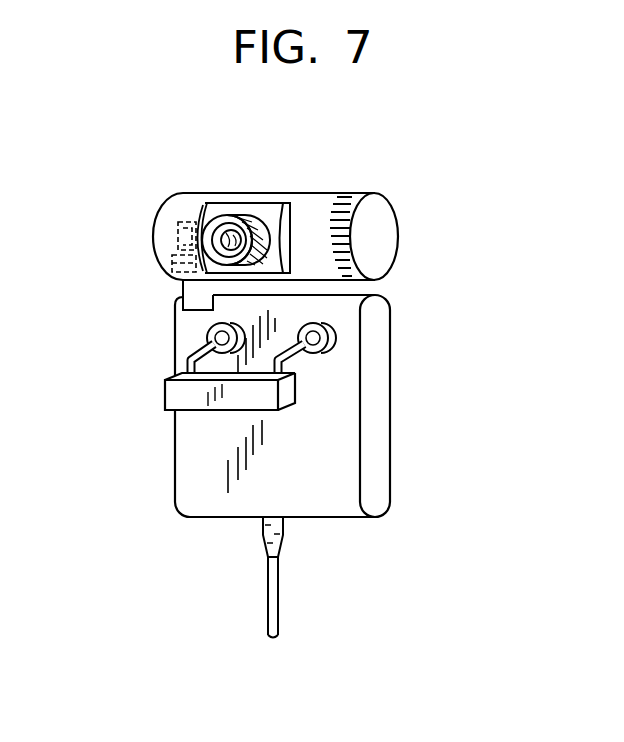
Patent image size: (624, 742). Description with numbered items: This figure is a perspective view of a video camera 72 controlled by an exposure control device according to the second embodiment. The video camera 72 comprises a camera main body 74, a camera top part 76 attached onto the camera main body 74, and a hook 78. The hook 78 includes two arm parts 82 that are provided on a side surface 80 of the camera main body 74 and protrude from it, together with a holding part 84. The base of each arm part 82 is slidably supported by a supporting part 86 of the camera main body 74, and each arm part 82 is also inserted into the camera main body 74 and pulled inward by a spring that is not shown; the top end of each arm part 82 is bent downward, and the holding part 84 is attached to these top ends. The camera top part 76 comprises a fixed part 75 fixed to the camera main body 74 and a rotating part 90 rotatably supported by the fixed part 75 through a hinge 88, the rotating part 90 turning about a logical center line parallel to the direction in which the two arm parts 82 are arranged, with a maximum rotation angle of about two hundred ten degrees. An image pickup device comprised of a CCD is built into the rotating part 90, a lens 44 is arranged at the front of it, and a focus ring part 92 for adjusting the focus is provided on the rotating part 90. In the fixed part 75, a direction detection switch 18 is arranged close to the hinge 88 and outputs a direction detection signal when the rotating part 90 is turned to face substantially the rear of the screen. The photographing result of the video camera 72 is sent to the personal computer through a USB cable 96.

The video camera 72 is at (160, 172).
The fixed part 75 is at (190, 205).
The camera top part 76 is at (352, 193).
The rotating part 90 is at (380, 232).
The focus ring part 92 is at (232, 216).
The lens 44 is at (268, 216).
The hinge 88 is at (176, 228).
The direction detection switch 18 is at (176, 256).
The hook 78 is at (158, 342).
The side surface 80 is at (336, 491).
The camera main body 74 is at (374, 451).
The supporting part 86 is at (322, 340).
The arm part 82 is at (300, 360).
The holding part 84 is at (205, 422).
The USB cable 96 is at (275, 587).